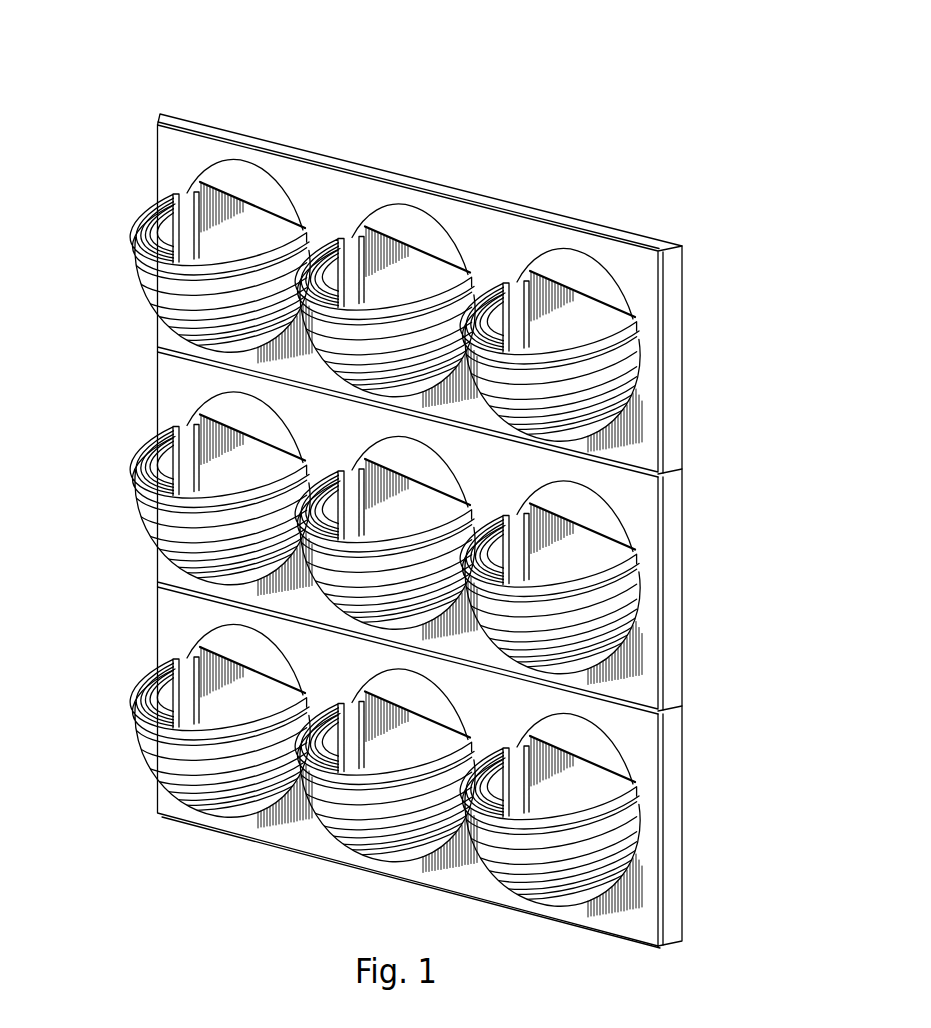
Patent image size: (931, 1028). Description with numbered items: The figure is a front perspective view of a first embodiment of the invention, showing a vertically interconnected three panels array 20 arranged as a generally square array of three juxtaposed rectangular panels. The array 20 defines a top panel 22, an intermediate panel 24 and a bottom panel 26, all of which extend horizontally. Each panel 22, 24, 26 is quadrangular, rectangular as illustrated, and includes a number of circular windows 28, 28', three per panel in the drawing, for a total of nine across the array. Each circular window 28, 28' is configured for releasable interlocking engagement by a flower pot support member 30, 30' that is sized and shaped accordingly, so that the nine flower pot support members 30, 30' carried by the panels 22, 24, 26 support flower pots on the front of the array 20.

The three panels array 20 is at (220, 127).
The top panel 22 is at (318, 192).
The intermediate panel 24 is at (173, 390).
The bottom panel 26 is at (180, 616).
The circular window 28 is at (623, 306).
The circular window 28' is at (625, 815).
The flower pot support member 30 is at (173, 735).
The flower pot support member 30' is at (327, 805).